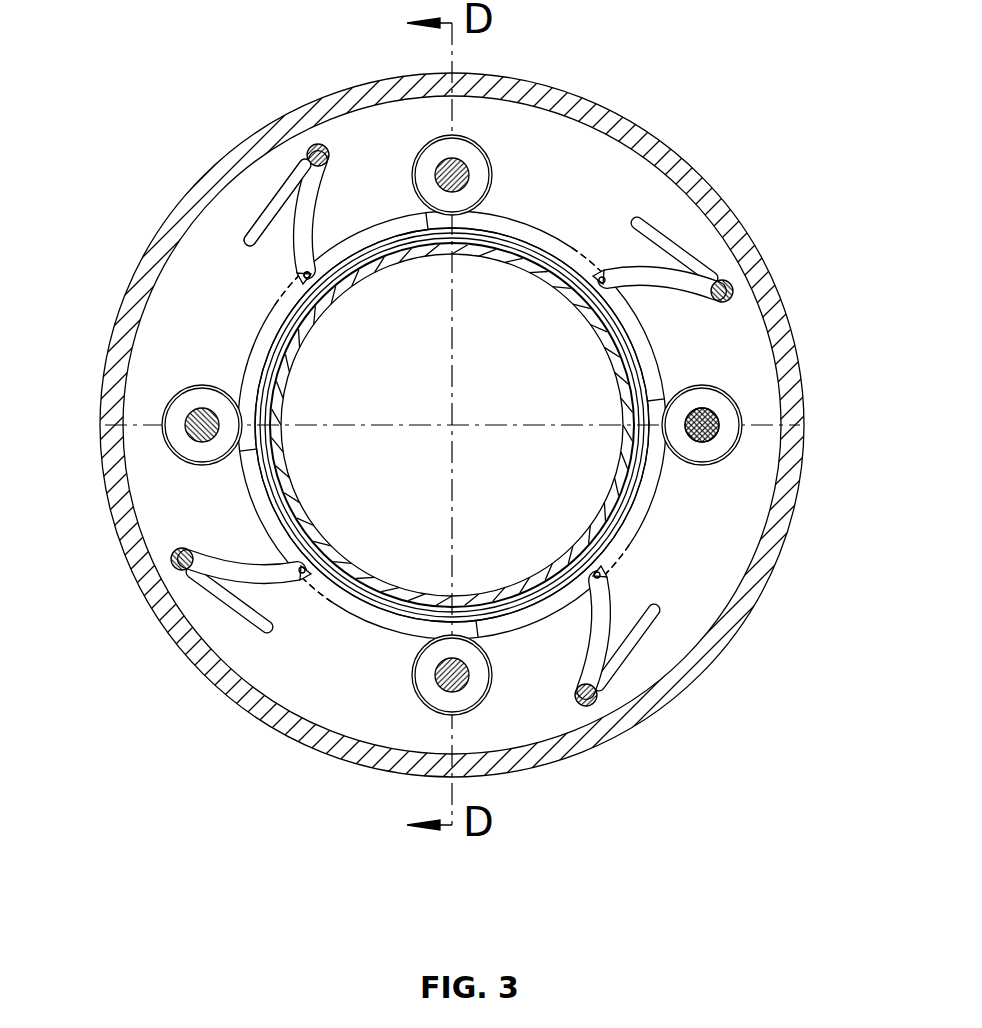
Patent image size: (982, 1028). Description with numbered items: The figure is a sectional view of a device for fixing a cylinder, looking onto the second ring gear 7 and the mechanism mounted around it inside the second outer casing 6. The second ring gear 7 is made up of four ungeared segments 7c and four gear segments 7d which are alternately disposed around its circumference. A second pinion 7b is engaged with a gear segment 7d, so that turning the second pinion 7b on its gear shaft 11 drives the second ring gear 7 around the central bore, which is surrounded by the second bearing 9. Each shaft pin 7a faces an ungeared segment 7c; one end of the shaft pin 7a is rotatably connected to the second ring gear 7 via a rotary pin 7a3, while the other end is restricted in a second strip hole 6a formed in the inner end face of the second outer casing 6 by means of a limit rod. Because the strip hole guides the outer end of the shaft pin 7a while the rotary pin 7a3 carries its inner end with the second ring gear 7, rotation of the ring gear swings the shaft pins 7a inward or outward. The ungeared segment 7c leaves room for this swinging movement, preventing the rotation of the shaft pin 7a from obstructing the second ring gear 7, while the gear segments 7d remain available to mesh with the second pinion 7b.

The second outer casing 6 is at (212, 183).
The second strip hole 6a is at (262, 623).
The second ring gear 7 is at (637, 507).
The shaft pin 7a is at (600, 662).
The rotary pin 7a3 is at (305, 275).
The second pinion 7b is at (178, 413).
The ungeared segment 7c is at (258, 495).
The gear segment 7d is at (367, 627).
The second bearing 9 is at (532, 258).
The gear shaft 11 is at (706, 423).